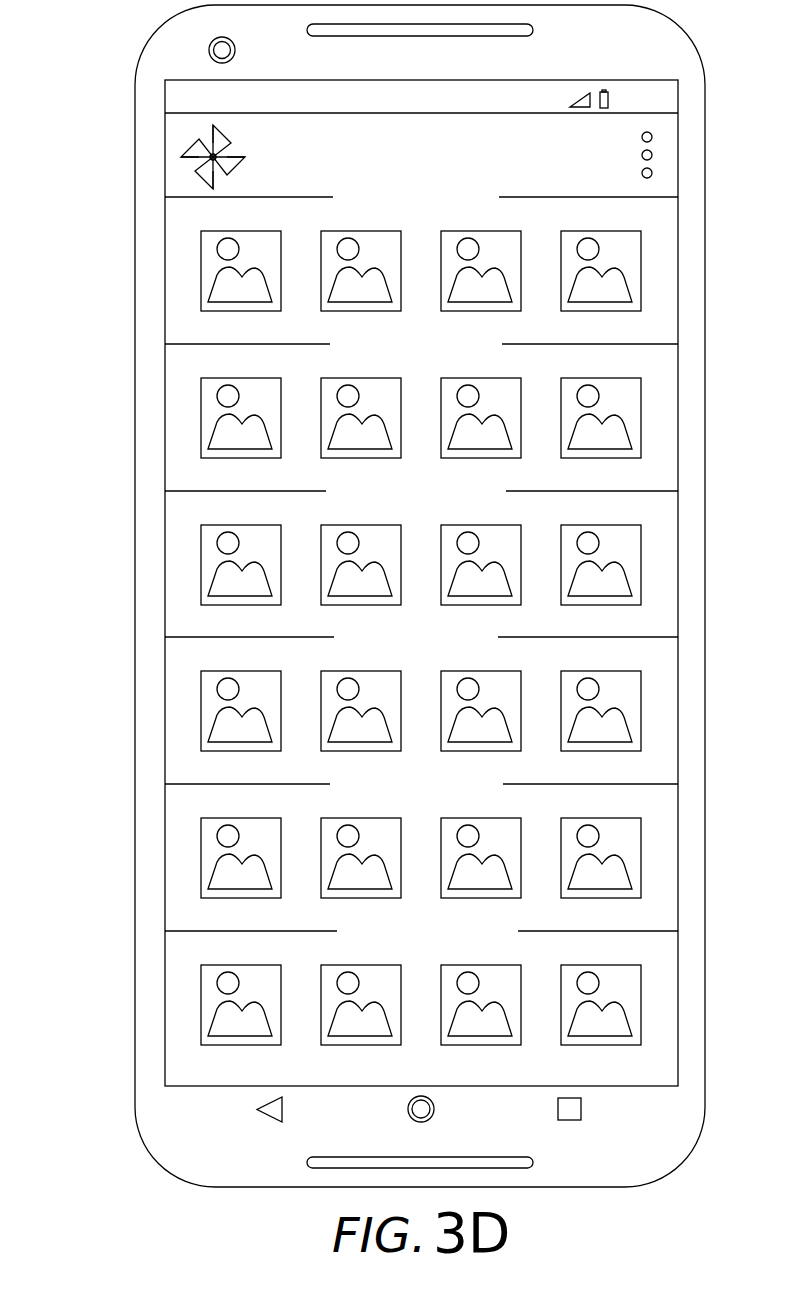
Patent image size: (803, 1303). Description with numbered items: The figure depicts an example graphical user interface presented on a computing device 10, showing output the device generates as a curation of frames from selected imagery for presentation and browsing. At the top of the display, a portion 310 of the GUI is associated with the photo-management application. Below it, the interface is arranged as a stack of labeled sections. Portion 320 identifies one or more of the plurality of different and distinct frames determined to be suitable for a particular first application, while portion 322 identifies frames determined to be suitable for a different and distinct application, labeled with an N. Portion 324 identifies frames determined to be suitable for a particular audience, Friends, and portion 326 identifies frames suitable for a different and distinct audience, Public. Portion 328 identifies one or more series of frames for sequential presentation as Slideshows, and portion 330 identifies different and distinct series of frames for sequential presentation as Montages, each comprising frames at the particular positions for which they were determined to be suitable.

The computing device 10 is at (135, 85).
The portion of the GUI 310 is at (165, 140).
The portion of the GUI 320 is at (165, 227).
The portion of the GUI 322 is at (165, 374).
The portion of the GUI 324 is at (165, 521).
The portion of the GUI 326 is at (165, 668).
The portion of the GUI 328 is at (165, 815).
The portion of the GUI 330 is at (165, 962).